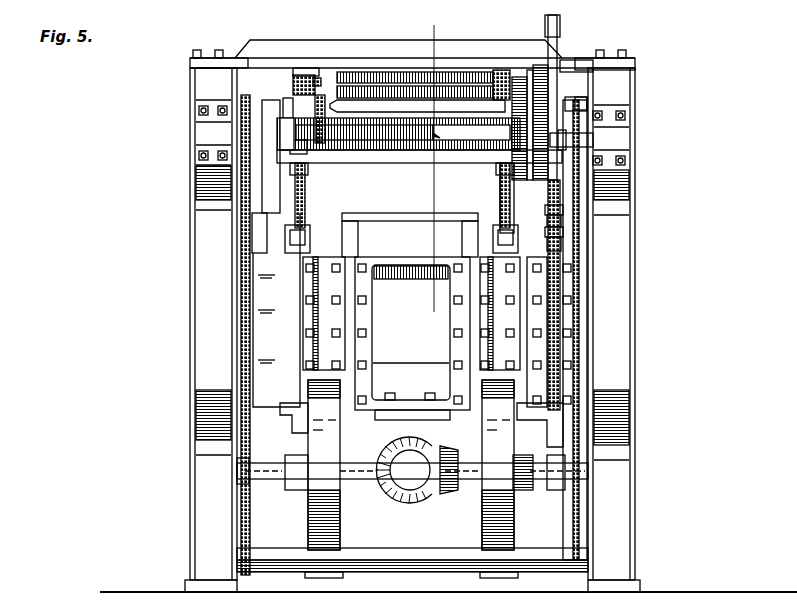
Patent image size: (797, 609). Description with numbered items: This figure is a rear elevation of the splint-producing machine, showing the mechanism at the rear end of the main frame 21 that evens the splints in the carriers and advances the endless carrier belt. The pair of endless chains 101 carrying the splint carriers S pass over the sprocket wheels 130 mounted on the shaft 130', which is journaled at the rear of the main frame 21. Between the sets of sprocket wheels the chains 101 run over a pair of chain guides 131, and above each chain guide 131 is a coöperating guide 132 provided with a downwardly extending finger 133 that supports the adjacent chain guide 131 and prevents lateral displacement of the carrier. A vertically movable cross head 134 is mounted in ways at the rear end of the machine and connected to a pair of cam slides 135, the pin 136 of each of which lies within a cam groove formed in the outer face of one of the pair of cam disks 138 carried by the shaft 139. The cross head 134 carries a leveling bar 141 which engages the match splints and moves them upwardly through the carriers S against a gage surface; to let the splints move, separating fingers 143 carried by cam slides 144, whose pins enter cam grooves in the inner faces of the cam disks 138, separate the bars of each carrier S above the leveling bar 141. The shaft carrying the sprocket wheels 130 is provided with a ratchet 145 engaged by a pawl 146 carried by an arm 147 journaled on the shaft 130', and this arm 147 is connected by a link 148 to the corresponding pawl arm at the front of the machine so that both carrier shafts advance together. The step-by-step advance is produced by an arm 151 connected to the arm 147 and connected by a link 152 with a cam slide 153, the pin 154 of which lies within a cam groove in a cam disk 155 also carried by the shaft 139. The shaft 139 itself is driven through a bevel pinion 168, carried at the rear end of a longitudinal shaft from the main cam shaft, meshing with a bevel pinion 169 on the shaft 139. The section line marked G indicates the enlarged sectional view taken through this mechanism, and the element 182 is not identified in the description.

The main frame 21 is at (197, 350).
The endless chains 101 is at (317, 80).
The sprocket wheels 130 is at (471, 158).
The shaft 130' is at (366, 164).
The chain guides 131 is at (292, 102).
The coöperating guide 132 is at (310, 67).
The downwardly extending finger 133 is at (293, 80).
The vertically movable cross head 134 is at (382, 163).
The cam slides 135 is at (290, 249).
The pin 136 is at (302, 417).
The cam disks 138 is at (306, 525).
The shaft 139 is at (363, 487).
The leveling bar 141 is at (357, 108).
The separating fingers 143 is at (327, 183).
The cam slides 144 is at (350, 237).
The ratchet 145 is at (603, 190).
The pawl 146 is at (548, 97).
The arm 147 is at (553, 68).
The link 148 is at (560, 14).
The arm 151 is at (563, 140).
The link 152 is at (563, 234).
The cam slide 153 is at (553, 357).
The pin 154 is at (563, 437).
The cam disk 155 is at (570, 473).
The bevel pinion 168 is at (413, 505).
The bevel pinion 169 is at (440, 500).
The hatched row 182 is at (400, 62).
The section line G is at (445, 24).
The splint carriers S is at (445, 78).